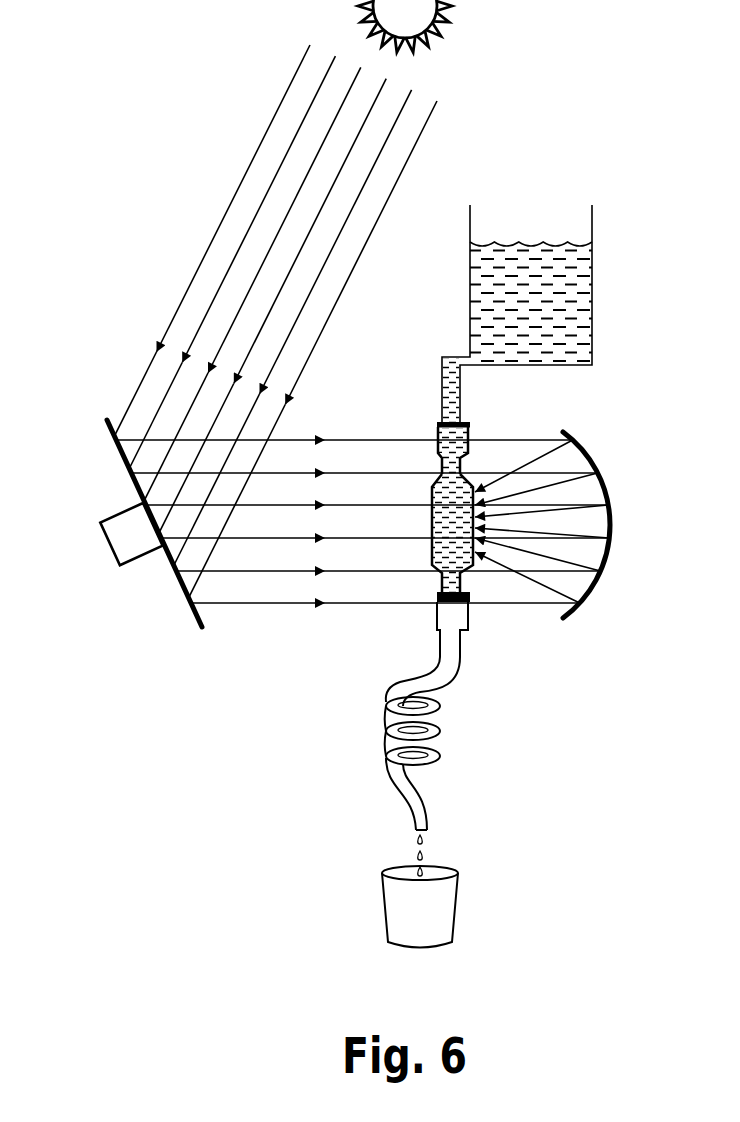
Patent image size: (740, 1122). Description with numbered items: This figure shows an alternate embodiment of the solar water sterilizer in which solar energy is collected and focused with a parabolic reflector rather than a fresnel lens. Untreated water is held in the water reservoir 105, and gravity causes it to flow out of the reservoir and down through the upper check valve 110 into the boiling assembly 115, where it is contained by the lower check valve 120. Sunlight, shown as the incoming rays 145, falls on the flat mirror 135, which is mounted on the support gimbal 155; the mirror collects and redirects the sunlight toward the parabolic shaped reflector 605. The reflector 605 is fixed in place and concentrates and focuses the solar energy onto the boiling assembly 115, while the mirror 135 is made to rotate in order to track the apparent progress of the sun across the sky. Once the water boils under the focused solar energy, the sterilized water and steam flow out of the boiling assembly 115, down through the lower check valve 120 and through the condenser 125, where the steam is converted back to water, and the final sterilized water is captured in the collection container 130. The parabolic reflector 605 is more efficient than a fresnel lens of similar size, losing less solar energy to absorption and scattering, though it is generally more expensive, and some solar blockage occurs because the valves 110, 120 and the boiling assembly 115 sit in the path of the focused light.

The water reservoir 105 is at (592, 295).
The upper check valve 110 is at (470, 428).
The boiling assembly 115 is at (432, 544).
The lower check valve 120 is at (468, 627).
The condenser 125 is at (439, 735).
The collection container 130 is at (457, 907).
The flat mirror 135 is at (119, 453).
The sunlight rays 145 is at (220, 204).
The support gimbal 155 is at (104, 533).
The parabolic shaped reflector 605 is at (616, 554).